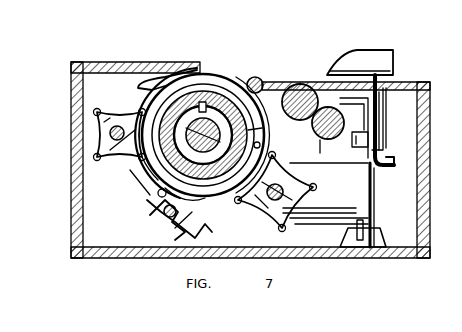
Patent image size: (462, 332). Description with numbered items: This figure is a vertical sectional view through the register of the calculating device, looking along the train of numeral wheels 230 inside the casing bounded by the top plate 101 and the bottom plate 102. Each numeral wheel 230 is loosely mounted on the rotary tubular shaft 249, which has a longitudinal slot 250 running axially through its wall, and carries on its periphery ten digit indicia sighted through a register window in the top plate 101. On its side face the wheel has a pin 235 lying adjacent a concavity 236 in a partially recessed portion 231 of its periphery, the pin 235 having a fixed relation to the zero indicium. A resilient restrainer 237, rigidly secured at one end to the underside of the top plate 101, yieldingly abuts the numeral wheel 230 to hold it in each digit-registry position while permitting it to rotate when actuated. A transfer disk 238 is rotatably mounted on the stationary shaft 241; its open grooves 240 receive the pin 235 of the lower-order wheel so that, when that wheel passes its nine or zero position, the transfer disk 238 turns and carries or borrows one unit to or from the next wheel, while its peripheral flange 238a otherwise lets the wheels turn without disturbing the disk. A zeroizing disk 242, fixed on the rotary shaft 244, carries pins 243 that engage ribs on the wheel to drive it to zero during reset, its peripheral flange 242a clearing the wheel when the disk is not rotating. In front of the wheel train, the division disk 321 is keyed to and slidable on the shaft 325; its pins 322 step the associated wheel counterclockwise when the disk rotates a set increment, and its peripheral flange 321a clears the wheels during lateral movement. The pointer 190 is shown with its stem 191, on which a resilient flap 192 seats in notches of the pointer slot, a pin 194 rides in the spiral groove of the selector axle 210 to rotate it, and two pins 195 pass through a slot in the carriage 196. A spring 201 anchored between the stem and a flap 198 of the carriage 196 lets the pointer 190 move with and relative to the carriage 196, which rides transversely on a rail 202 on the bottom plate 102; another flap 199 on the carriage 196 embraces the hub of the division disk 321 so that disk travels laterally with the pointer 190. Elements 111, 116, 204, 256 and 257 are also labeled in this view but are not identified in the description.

The top plate 101 is at (124, 66).
The bottom plate 102 is at (372, 259).
The stem of control member 111 is at (308, 82).
The pivot pin 116 is at (257, 76).
The pointer 190 is at (380, 63).
The stem 191 is at (380, 123).
The resilient flap 192 is at (383, 102).
The pin 194 is at (343, 122).
The pins 195 is at (370, 141).
The carriage 196 is at (329, 193).
The flap 198 is at (386, 157).
The flap 199 is at (366, 209).
The spring 201 is at (388, 207).
The rail 202 is at (373, 239).
The roller 204 is at (299, 84).
The selector axle 210 is at (328, 136).
The numeral wheel 230 is at (213, 77).
The partially recessed portion 231 is at (218, 86).
The pin 235 is at (150, 215).
The concavity 236 is at (155, 190).
The resilient restrainer 237 is at (137, 86).
The transfer disk 238 is at (180, 212).
The peripheral flange 238a is at (170, 233).
The open grooves 240 is at (171, 223).
The stationary shaft 241 is at (192, 225).
The zeroizing disk 242 is at (120, 118).
The peripheral flange 242a is at (98, 137).
The pins 243 is at (140, 160).
The rotary shaft 244 is at (123, 183).
The tubular shaft 249 is at (250, 128).
The longitudinal slot 250 is at (198, 70).
The pin 256 is at (261, 146).
The central shaft 257 is at (203, 112).
The division disk 321 is at (276, 201).
The peripheral flange 321a is at (254, 192).
The pins 322 is at (280, 215).
The shaft 325 is at (292, 196).